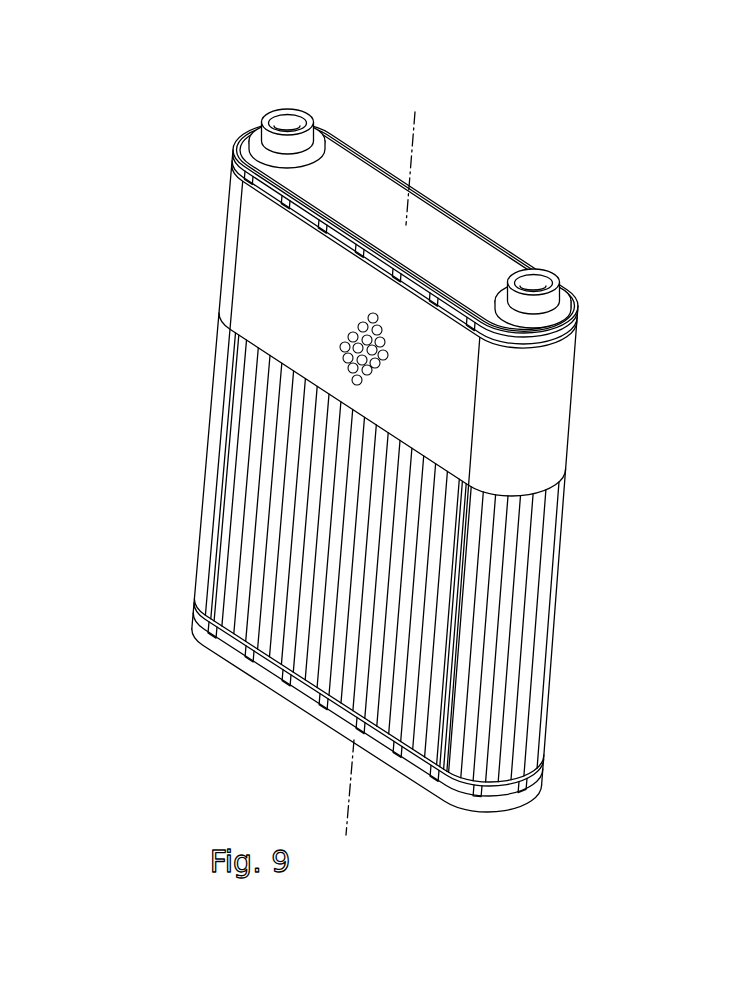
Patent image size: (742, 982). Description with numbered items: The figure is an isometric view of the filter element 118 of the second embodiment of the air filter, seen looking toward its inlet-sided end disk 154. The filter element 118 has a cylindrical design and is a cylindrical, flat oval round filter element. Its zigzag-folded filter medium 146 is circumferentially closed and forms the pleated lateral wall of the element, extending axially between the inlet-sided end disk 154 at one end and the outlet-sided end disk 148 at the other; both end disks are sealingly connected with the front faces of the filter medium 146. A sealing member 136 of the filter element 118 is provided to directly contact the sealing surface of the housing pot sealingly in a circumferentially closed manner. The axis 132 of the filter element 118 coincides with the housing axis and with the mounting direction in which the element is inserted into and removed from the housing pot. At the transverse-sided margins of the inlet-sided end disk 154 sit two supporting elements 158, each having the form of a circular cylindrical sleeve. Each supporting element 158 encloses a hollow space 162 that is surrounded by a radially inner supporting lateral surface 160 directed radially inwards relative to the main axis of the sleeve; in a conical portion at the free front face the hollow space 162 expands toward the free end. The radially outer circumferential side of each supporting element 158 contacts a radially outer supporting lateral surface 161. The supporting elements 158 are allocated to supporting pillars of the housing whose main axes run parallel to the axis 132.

The filter element 118 is at (126, 101).
The axis 132 is at (416, 118).
The sealing member 136 is at (278, 680).
The filter medium 146 is at (235, 493).
The outlet-sided end disk 148 is at (197, 612).
The inlet-sided end disk 154 is at (440, 230).
The supporting element 158 is at (242, 141).
The radially inner supporting lateral surface 160 is at (300, 121).
The radially outer supporting lateral surface 161 is at (318, 170).
The hollow space 162 is at (287, 126).